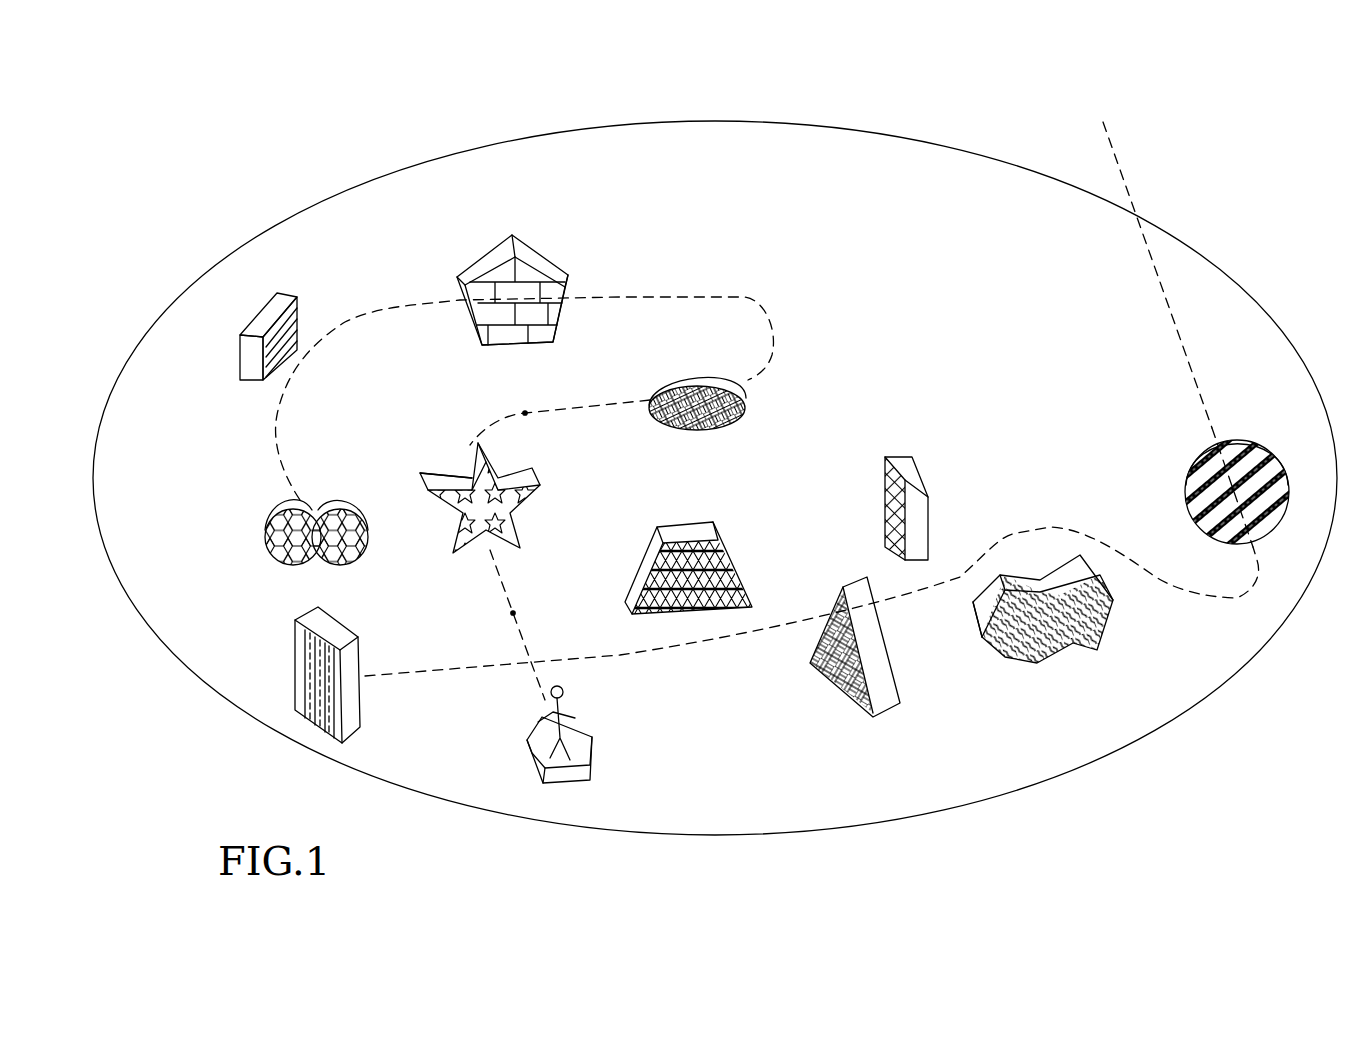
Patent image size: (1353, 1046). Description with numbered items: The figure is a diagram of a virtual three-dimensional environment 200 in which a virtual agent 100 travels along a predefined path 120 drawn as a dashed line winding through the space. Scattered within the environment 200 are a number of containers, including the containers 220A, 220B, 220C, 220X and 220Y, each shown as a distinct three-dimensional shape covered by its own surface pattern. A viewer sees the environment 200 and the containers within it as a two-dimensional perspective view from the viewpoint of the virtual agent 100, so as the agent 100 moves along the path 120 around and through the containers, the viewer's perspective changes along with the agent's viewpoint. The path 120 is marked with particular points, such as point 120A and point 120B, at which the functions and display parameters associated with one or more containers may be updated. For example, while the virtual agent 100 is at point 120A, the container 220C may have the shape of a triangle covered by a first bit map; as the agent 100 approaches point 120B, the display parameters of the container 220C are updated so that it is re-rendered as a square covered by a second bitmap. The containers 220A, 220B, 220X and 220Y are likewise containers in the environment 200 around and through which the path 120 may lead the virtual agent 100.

The three-dimensional environment 200 is at (918, 132).
The predefined path 120 is at (345, 322).
The point on the predefined path 120A is at (513, 612).
The point on the predefined path 120B is at (525, 413).
The container 220A is at (732, 557).
The container 220B is at (535, 490).
The container 220C is at (745, 412).
The container 220X is at (1040, 575).
The container 220Y is at (1185, 468).
The virtual agent 100 is at (572, 730).